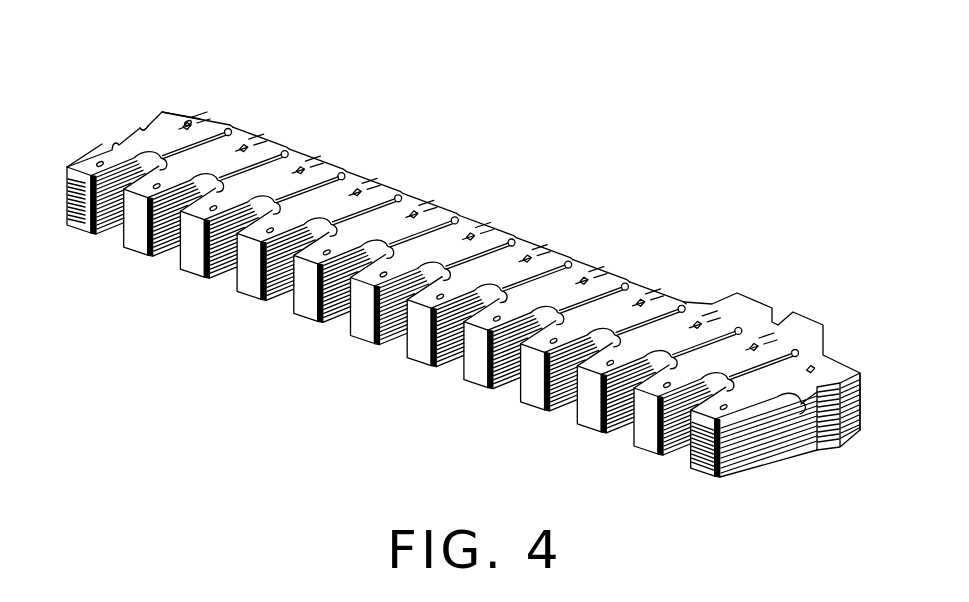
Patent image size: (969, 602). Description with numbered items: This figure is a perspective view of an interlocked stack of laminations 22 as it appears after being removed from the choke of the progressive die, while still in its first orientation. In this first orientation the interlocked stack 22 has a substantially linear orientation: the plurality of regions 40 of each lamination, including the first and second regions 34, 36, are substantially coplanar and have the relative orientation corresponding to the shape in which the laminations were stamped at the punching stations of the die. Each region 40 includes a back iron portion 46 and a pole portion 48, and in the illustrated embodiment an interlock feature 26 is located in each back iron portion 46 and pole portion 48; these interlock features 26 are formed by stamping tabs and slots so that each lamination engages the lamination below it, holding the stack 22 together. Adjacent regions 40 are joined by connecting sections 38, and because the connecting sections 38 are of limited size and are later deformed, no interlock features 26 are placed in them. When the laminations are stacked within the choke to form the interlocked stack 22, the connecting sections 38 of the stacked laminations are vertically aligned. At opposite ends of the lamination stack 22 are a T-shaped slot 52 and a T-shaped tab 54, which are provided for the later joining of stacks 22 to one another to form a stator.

The interlocked stack of laminations 22 is at (490, 139).
The interlock features 26 is at (188, 120).
The first region 34 is at (257, 145).
The second region 36 is at (300, 165).
The connecting sections 38 is at (400, 194).
The regions 40 is at (578, 270).
The back iron portion 46 is at (203, 122).
The pole portion 48 is at (113, 146).
The T-shaped slot 52 is at (149, 121).
The T-shaped tab 54 is at (828, 437).